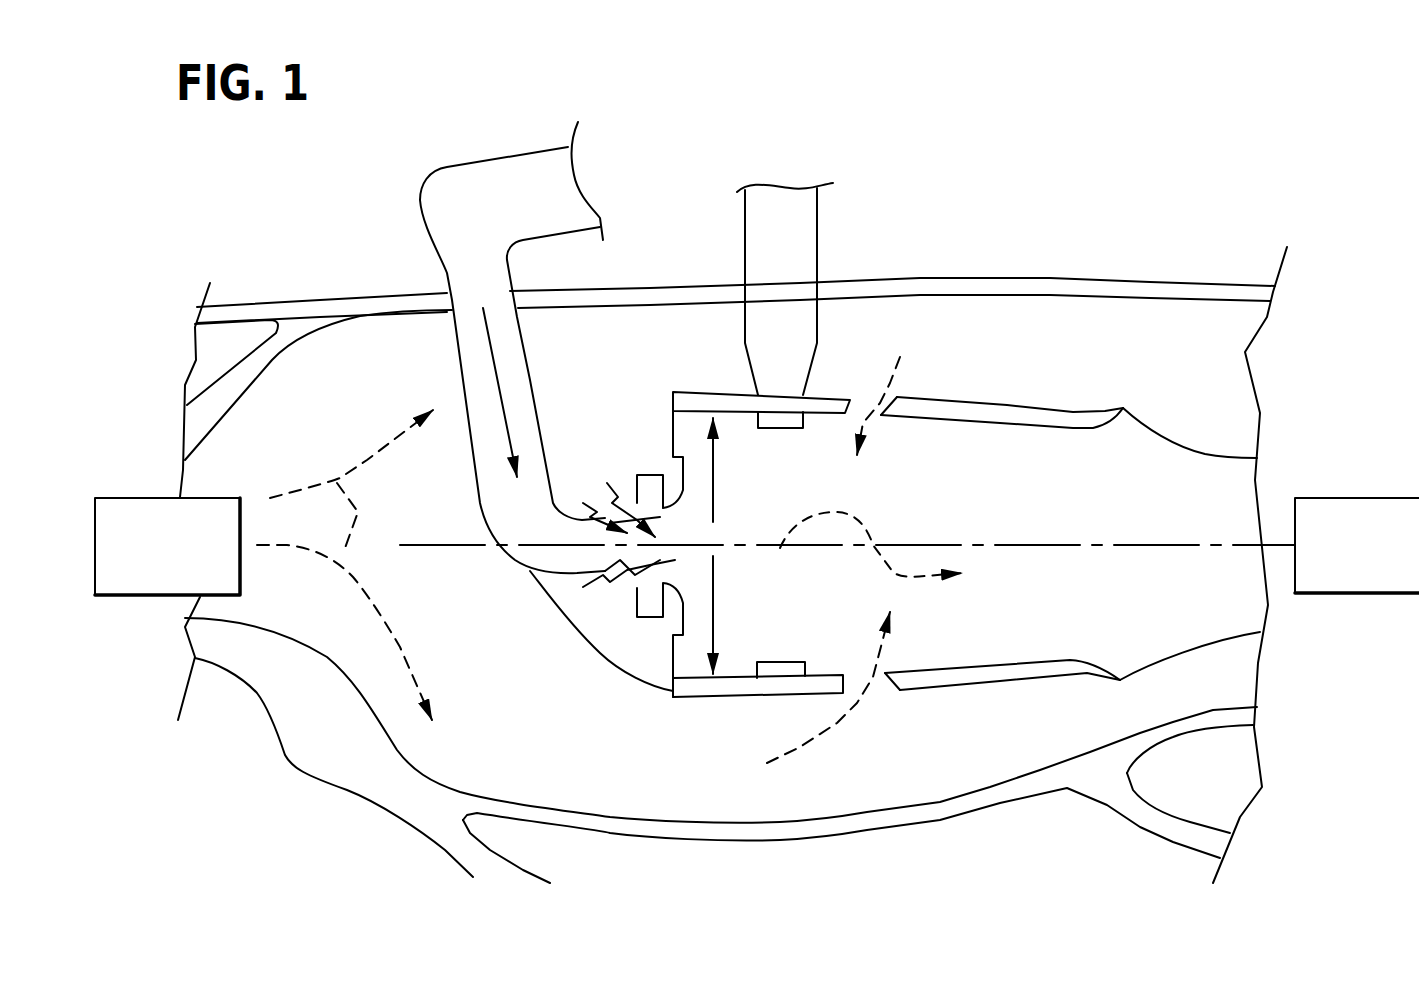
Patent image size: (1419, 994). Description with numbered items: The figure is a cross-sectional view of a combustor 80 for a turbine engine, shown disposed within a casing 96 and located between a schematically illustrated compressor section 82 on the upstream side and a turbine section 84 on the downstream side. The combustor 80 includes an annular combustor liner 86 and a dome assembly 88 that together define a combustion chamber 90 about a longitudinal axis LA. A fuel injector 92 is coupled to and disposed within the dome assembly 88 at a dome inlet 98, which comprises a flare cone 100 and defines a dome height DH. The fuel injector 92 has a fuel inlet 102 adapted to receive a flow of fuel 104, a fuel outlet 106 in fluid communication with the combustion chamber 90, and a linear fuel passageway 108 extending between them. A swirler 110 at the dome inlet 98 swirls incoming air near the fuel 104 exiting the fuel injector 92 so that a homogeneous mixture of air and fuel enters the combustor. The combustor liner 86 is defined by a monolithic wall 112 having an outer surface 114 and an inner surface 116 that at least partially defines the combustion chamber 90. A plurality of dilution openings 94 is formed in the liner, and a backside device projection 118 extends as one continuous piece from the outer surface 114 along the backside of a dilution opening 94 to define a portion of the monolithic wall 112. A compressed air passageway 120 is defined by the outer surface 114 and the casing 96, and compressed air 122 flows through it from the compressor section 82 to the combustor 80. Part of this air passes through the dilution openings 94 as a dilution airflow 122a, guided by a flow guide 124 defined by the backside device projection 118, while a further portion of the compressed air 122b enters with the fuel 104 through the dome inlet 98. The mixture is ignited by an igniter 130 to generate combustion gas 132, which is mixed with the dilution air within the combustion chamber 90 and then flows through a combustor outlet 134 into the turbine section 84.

The combustor 80 is at (997, 377).
The compressor section 82 is at (183, 560).
The turbine section 84 is at (1377, 560).
The annular combustor liner 86 is at (1037, 410).
The dome assembly 88 is at (722, 385).
The combustion chamber 90 is at (983, 517).
The fuel injector 92 is at (667, 587).
The dilution openings 94 is at (872, 400).
The casing 96 is at (1120, 296).
The dome inlet 98 is at (727, 568).
The flare cone 100 is at (687, 485).
The fuel inlet 102 is at (498, 190).
The flow of fuel 104 is at (487, 370).
The fuel outlet 106 is at (613, 513).
The linear fuel passageway 108 is at (517, 373).
The swirler 110 is at (615, 582).
The monolithic wall 112 is at (919, 390).
The outer surface 114 is at (1007, 403).
The inner surface 116 is at (978, 425).
The backside device projection 118 is at (883, 410).
The compressed air passageway 120 is at (672, 362).
The compressed air 122 is at (358, 512).
The dilution airflow 122a is at (867, 423).
The further portion of compressed air 122b is at (598, 392).
The flow guide 124 is at (890, 383).
The igniter 130 is at (780, 341).
The combustion gas 132 is at (847, 523).
The combustor outlet 134 is at (1197, 468).
The dome height DH is at (717, 546).
The longitudinal axis LA is at (1047, 547).